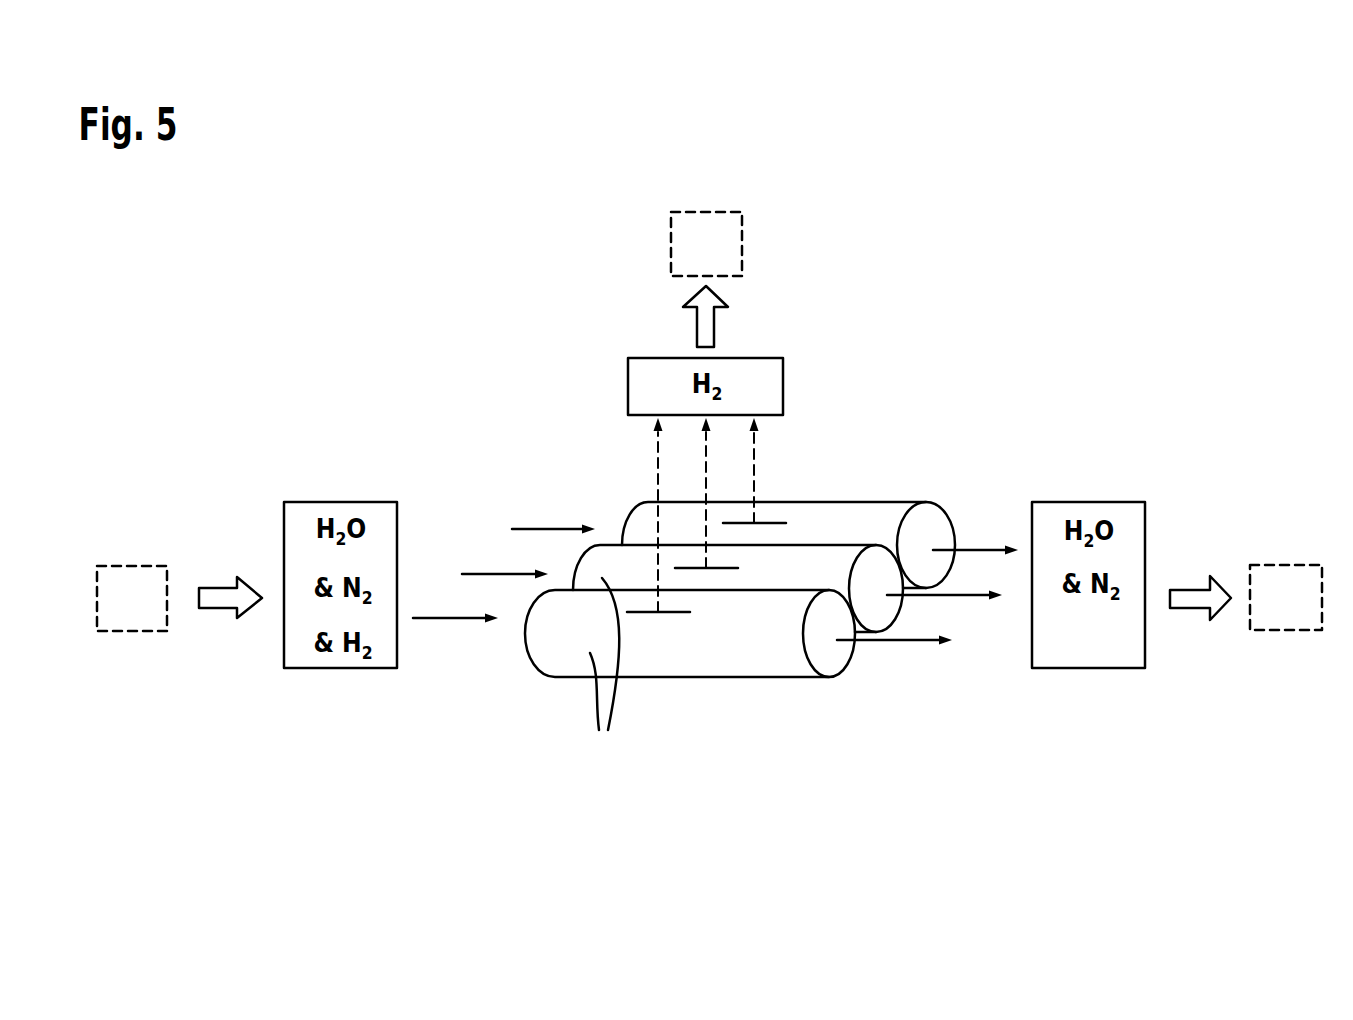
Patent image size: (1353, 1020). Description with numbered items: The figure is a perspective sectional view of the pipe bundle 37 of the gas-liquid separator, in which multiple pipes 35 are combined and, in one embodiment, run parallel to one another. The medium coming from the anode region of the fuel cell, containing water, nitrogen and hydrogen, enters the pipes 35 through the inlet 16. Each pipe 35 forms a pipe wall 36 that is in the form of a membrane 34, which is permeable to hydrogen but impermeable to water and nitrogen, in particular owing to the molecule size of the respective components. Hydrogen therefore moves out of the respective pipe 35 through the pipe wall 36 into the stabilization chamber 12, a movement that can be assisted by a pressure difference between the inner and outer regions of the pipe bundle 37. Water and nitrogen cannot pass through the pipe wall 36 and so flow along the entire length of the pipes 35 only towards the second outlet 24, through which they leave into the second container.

The stabilization chamber 12 is at (812, 240).
The inlet 16 is at (131, 686).
The second outlet 24 is at (1285, 684).
The membrane 34 is at (752, 588).
The pipe 35 is at (849, 505).
The pipe wall 36 is at (888, 533).
The pipe bundle 37 is at (433, 380).